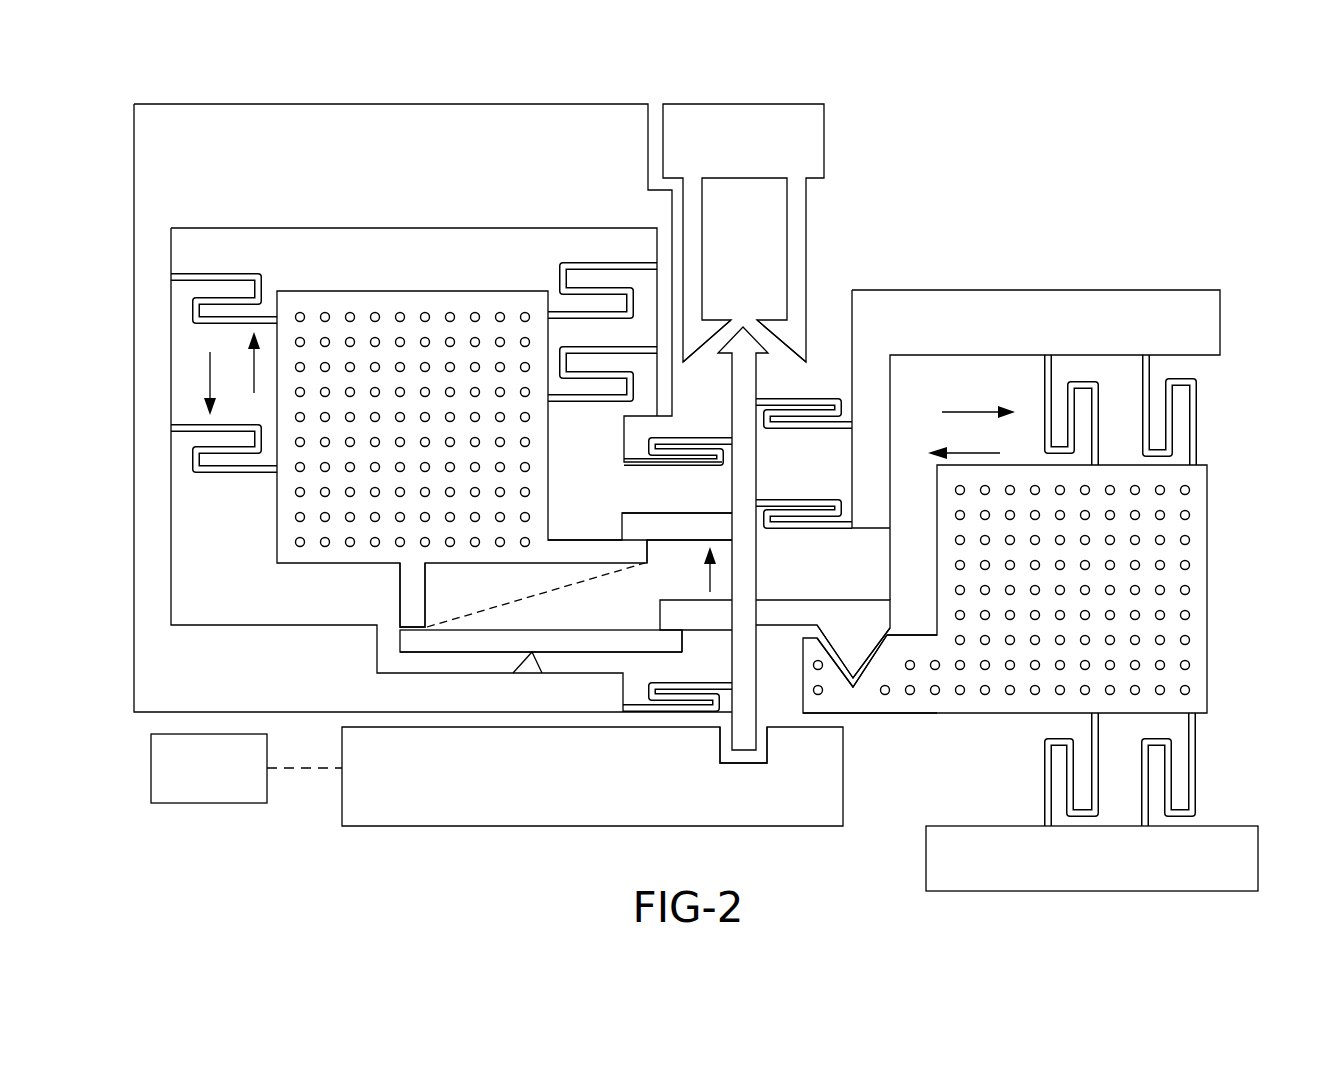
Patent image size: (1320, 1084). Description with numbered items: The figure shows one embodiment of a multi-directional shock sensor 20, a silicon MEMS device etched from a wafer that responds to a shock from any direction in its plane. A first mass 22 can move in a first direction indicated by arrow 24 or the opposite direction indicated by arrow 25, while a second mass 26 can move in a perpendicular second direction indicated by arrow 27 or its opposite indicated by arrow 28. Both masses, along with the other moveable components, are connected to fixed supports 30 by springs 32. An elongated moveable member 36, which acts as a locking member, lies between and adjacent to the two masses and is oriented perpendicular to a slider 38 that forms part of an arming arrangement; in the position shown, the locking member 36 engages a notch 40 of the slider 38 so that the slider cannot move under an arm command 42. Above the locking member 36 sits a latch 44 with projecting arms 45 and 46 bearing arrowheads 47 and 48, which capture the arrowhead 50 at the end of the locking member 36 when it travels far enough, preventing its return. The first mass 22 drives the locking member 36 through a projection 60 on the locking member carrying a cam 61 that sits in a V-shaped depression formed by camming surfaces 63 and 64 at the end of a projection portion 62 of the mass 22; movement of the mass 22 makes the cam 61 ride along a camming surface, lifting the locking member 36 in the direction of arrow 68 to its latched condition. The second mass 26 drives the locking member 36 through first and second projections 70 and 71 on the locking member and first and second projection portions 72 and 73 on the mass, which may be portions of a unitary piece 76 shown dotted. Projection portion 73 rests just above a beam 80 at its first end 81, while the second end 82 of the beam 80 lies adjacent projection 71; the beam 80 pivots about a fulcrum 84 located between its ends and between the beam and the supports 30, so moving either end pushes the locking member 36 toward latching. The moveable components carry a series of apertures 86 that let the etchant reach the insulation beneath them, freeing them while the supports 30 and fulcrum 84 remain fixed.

The sensor 20 is at (1024, 160).
The first mass 22 is at (1218, 572).
The arrow indicating first direction 24 is at (965, 401).
The arrow indicating opposite direction 25 is at (977, 441).
The second mass 26 is at (430, 287).
The arrow indicating second direction 27 is at (253, 375).
The arrow indicating opposite direction 28 is at (208, 388).
The supports 30 is at (377, 140).
The springs 32 is at (185, 273).
The elongated moveable member 36 is at (770, 559).
The slider 38 is at (545, 805).
The notch 40 is at (746, 765).
The arm command 42 is at (208, 792).
The latch 44 is at (840, 138).
The projecting arm 45 is at (700, 226).
The projecting arm 46 is at (800, 230).
The arrowhead 47 is at (720, 318).
The arrowhead 48 is at (783, 310).
The arrowhead 50 is at (722, 360).
The projection 60 is at (790, 627).
The cam 61 is at (885, 625).
The projection portion 62 is at (873, 716).
The camming surface 63 is at (838, 645).
The camming surface 64 is at (880, 640).
The arrow 68 is at (708, 577).
The first projection 70 is at (648, 520).
The second projection 71 is at (668, 615).
The first projection portion 72 is at (602, 553).
The second projection portion 73 is at (405, 603).
The unitary piece 76 is at (432, 605).
The beam 80 is at (530, 640).
The first end 81 is at (423, 652).
The second end 82 is at (652, 645).
The fulcrum 84 is at (540, 658).
The apertures 86 is at (346, 313).